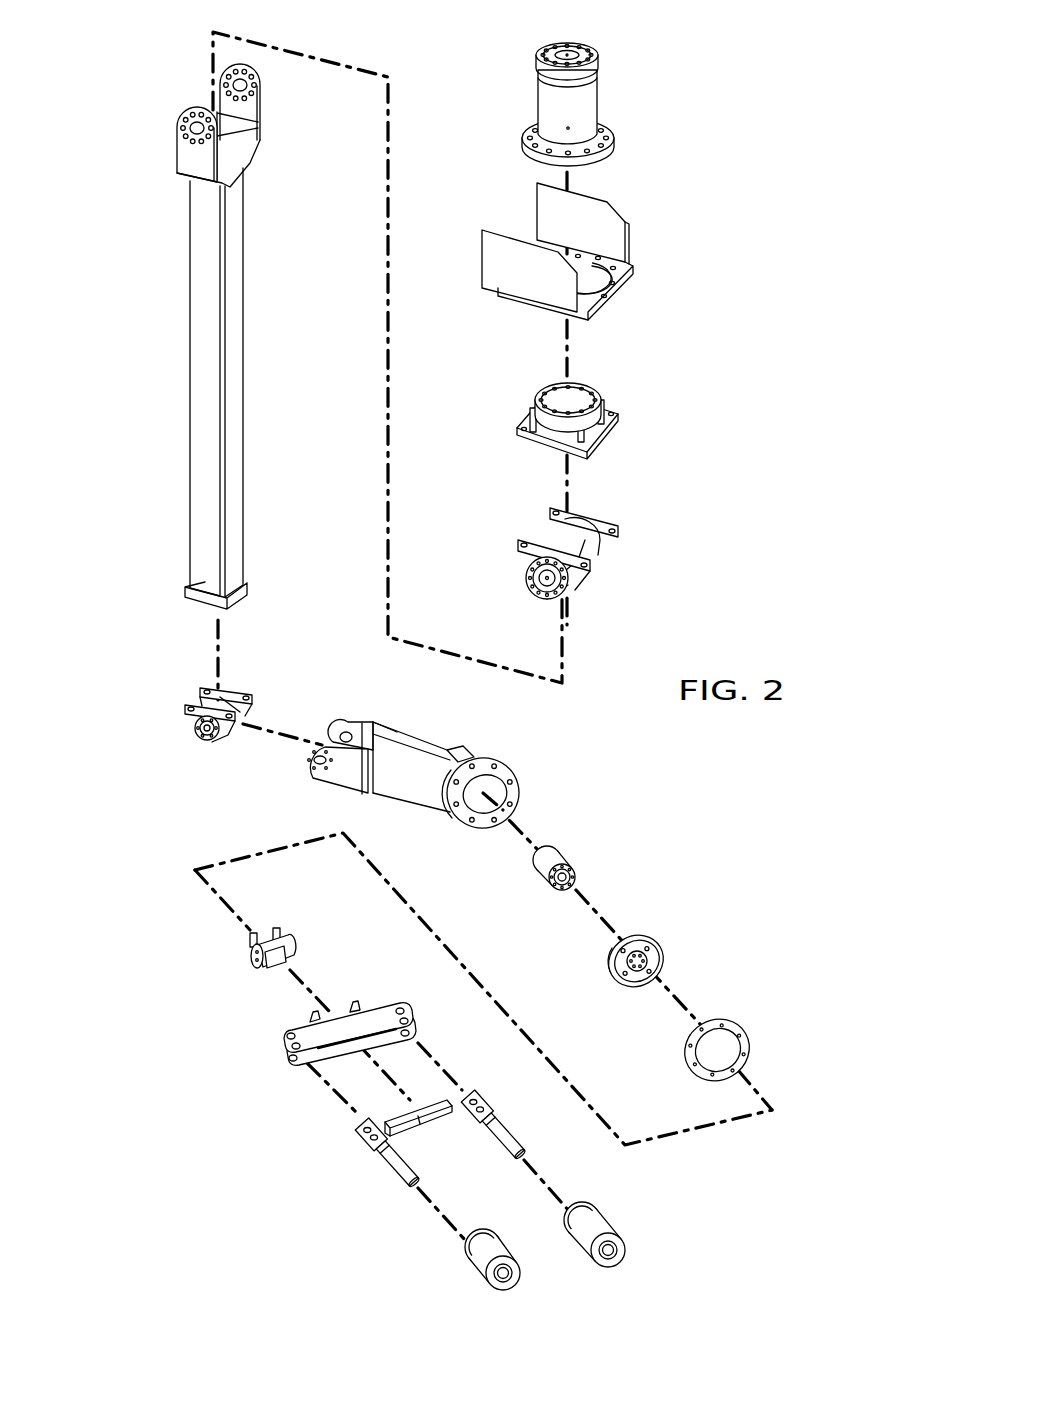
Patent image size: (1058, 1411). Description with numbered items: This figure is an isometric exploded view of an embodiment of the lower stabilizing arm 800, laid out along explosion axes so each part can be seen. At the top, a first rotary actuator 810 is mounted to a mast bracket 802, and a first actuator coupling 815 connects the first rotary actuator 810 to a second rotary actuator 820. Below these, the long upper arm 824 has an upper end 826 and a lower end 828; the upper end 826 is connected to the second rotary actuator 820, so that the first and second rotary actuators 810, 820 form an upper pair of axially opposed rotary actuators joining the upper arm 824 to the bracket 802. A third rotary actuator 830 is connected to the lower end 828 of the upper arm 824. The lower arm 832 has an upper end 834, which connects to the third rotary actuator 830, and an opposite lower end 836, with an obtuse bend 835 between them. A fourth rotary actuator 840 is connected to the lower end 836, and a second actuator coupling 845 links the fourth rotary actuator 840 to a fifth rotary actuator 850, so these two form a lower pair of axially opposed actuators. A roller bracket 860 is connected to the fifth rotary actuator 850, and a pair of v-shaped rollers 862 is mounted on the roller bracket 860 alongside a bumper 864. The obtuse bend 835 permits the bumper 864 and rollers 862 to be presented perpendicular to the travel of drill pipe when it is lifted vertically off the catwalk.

The lower stabilizing arm 800 is at (437, 661).
The mast bracket 802 is at (629, 241).
The first rotary actuator 810 is at (600, 100).
The first actuator coupling 815 is at (590, 386).
The second rotary actuator 820 is at (586, 516).
The upper arm 824 is at (190, 385).
The upper end 826 is at (176, 138).
The lower end 828 is at (196, 612).
The third rotary actuator 830 is at (195, 731).
The lower arm 832 is at (426, 742).
The upper end 834 is at (362, 720).
The obtuse bend 835 is at (470, 750).
The lower end 836 is at (521, 780).
The fourth rotary actuator 840 is at (566, 862).
The second actuator coupling 845 is at (650, 938).
The fifth rotary actuator 850 is at (251, 950).
The roller bracket 860 is at (378, 1006).
The v-shaped rollers 862 is at (465, 1262).
The bumper 864 is at (440, 1122).